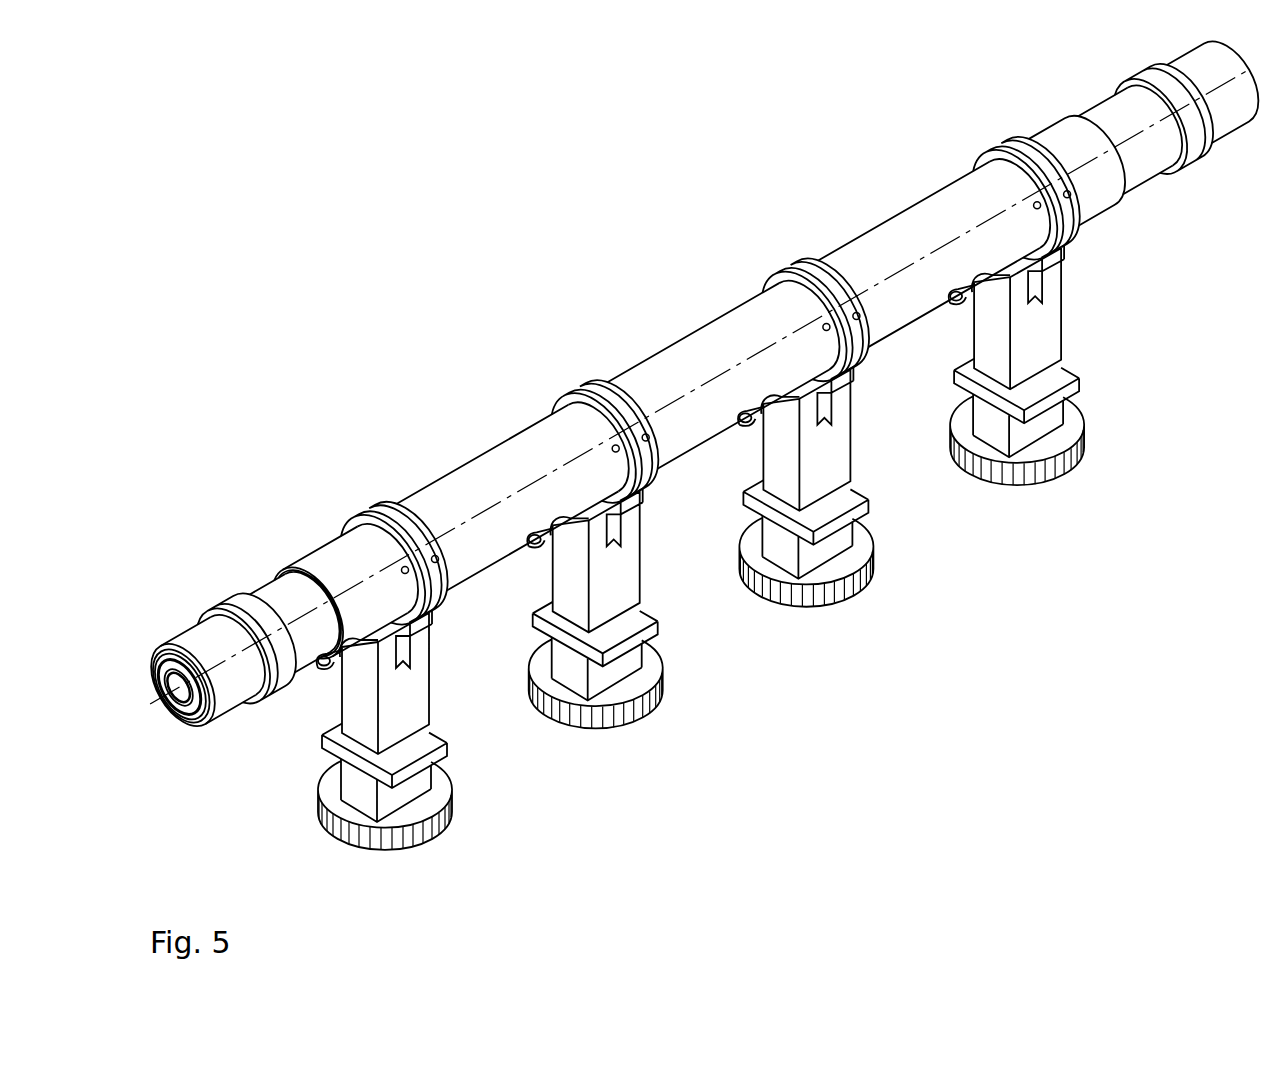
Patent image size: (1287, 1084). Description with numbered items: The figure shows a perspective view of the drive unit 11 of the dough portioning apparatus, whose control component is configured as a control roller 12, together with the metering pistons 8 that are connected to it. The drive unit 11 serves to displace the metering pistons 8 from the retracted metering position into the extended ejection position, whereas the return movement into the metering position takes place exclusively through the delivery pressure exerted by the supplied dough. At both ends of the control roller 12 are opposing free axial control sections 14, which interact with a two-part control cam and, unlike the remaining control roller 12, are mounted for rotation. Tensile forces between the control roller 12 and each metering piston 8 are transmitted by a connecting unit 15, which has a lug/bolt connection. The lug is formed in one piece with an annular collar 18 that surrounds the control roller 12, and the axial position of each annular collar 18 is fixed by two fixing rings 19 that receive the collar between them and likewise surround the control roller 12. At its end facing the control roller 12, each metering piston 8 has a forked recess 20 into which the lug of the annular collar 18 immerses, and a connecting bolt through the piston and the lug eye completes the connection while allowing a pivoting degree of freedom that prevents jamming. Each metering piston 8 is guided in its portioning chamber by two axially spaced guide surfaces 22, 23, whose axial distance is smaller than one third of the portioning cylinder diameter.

The metering piston 8 is at (717, 566).
The drive unit 11 is at (705, 383).
The control roller 12 is at (875, 247).
The free axial control sections 14 is at (193, 640).
The connecting unit 15 is at (533, 565).
The annular collar 18 is at (372, 530).
The fixing rings 19 is at (352, 538).
The forked recess 20 is at (404, 672).
The guide surface 22 is at (340, 834).
The guide surface 23 is at (345, 782).